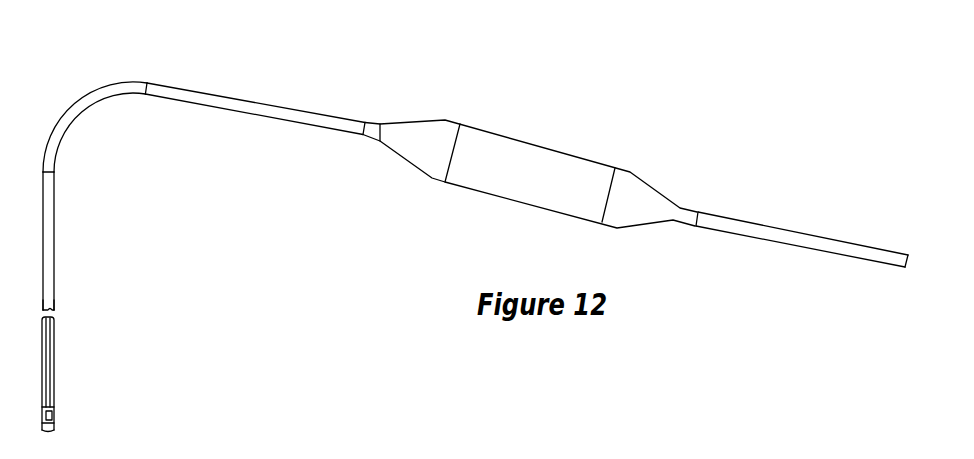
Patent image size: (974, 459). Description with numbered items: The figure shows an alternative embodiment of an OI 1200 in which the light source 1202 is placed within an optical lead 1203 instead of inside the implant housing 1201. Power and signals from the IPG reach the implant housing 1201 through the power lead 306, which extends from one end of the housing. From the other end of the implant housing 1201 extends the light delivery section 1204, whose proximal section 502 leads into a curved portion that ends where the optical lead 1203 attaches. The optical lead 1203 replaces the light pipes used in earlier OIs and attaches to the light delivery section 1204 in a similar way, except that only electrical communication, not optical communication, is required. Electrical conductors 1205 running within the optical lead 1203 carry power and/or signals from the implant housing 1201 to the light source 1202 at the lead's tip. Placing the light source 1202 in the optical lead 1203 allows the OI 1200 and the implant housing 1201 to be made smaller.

The OI 1200 is at (580, 84).
The light delivery section 1204 is at (184, 155).
The optical lead 1203 is at (54, 299).
The proximal section 502 is at (255, 109).
The implant housing 1201 is at (530, 174).
The power lead 306 is at (845, 255).
The electrical conductors 1205 is at (50, 366).
The light source 1202 is at (52, 408).